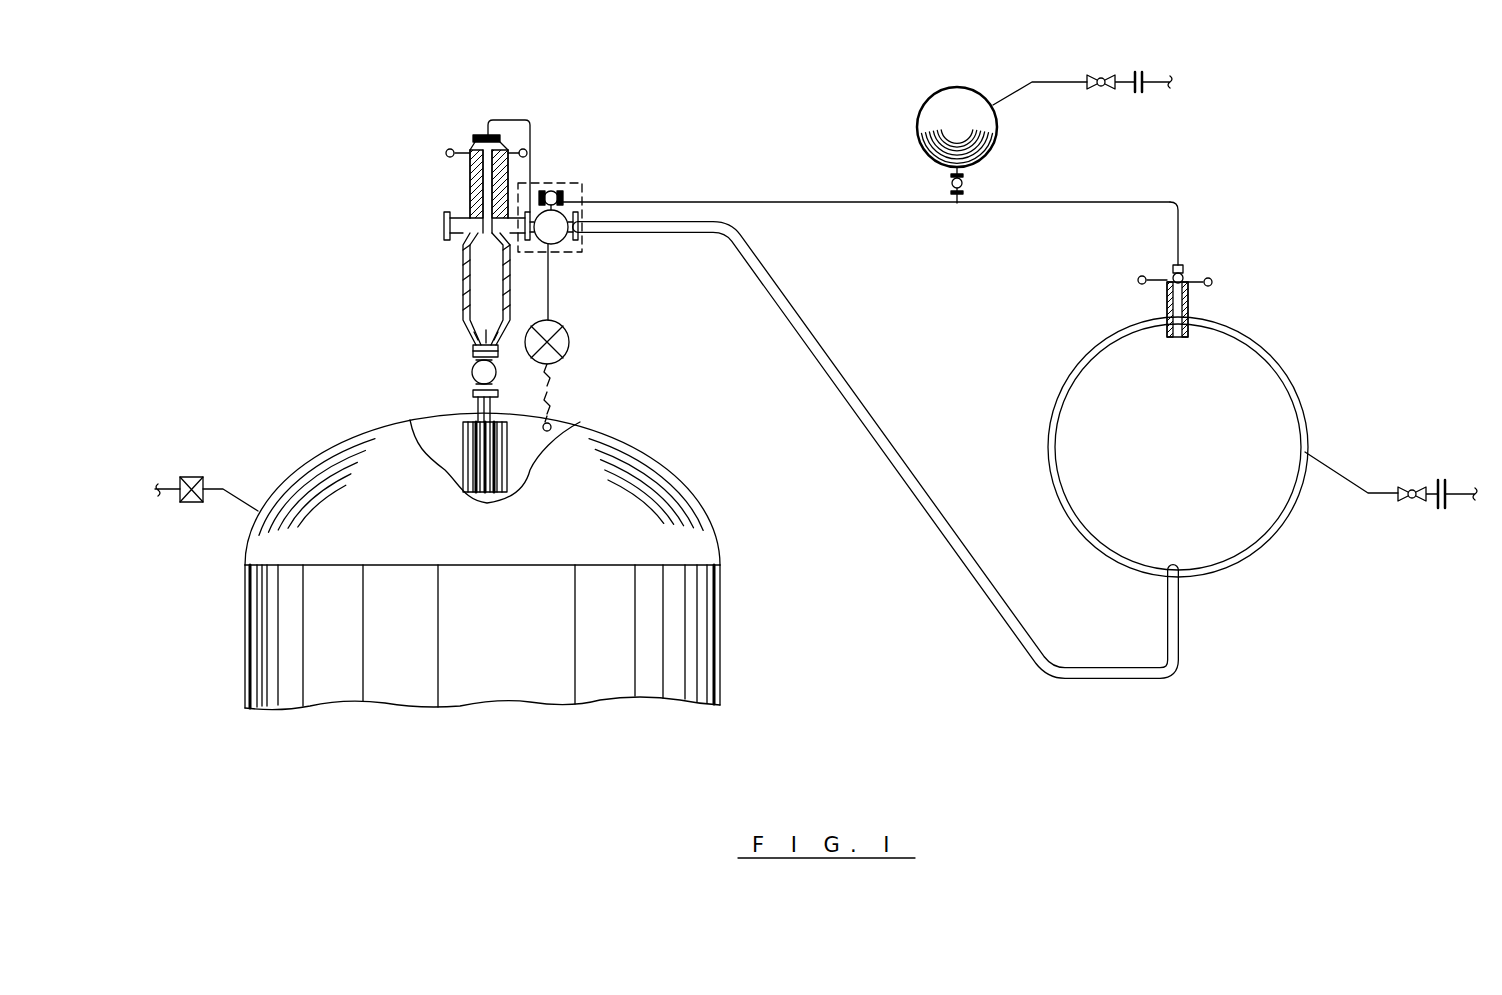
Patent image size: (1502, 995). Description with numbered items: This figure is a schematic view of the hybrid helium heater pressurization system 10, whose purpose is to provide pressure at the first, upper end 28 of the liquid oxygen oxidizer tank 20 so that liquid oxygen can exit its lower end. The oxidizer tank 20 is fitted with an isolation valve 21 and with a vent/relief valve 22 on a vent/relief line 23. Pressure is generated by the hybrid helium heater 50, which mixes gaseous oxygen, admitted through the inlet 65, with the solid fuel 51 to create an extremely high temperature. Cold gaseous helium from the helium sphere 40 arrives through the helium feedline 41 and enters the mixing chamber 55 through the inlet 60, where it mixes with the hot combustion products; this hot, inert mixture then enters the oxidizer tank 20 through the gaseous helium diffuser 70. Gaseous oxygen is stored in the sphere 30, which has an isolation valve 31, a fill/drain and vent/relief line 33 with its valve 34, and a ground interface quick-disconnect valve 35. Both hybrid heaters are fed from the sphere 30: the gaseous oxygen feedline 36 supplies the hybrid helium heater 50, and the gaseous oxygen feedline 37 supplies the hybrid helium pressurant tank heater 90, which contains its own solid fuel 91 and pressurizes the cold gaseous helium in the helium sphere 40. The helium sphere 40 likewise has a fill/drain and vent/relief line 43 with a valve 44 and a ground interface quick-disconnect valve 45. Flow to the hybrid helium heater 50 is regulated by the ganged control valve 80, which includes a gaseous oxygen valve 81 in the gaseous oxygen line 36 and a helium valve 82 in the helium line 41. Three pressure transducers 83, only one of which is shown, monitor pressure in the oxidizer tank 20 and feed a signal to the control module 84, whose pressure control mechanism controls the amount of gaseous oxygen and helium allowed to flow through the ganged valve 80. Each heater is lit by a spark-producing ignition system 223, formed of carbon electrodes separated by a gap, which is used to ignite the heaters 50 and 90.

The hybrid helium heater pressurization system 10 is at (806, 638).
The oxidizer tank 20 is at (630, 458).
The isolation valve for oxidizer tank 21 is at (472, 368).
The vent/relief valve for oxidizer tank 22 is at (195, 477).
The vent/relief line for oxidizer tank 23 is at (240, 507).
The first end of tank 28 is at (455, 420).
The sphere containing gaseous oxygen 30 is at (950, 90).
The isolation valve for gaseous oxygen tank 31 is at (965, 184).
The gaseous oxygen fill/drain, vent/relief line 33 is at (1008, 95).
The gaseous oxygen fill/drain, vent/relief valve 34 is at (1101, 90).
The ground interface/quick-disconnect valve for gaseous oxygen tank 35 is at (1145, 72).
The gaseous oxygen feedline for hybrid helium heater 36 is at (730, 202).
The gaseous oxygen feedline for hybrid helium tank heater 37 is at (1140, 202).
The gaseous helium sphere 40 is at (1250, 387).
The helium feedline for hybrid helium heater 41 is at (1182, 635).
The helium fill/drain, vent/relief line 43 is at (1338, 468).
The helium fill/drain, vent/relief valve 44 is at (1405, 505).
The ground interface/quick-disconnect valve for helium tank 45 is at (1438, 478).
The hybrid helium heater 50 is at (468, 182).
The solid fuel in hybrid helium heater 51 is at (470, 197).
The mixing chamber of hybrid helium heater 55 is at (463, 283).
The inlets for helium into hybrid helium heater 60 is at (443, 231).
The inlet for gaseous oxygen into hybrid helium heater 65 is at (482, 133).
The gaseous helium diffuser 70 is at (463, 460).
The ganged control valve 80 is at (584, 185).
The gaseous oxygen valve 81 is at (557, 190).
The helium valve 82 is at (560, 226).
The pressure transducers 83 is at (553, 425).
The control module 84 is at (569, 342).
The hybrid helium pressurant tank heater 90 is at (1190, 310).
The solid fuel in hybrid helium pressurant tank heater 91 is at (1167, 310).
The spark-producing ignition system 223 is at (425, 118).